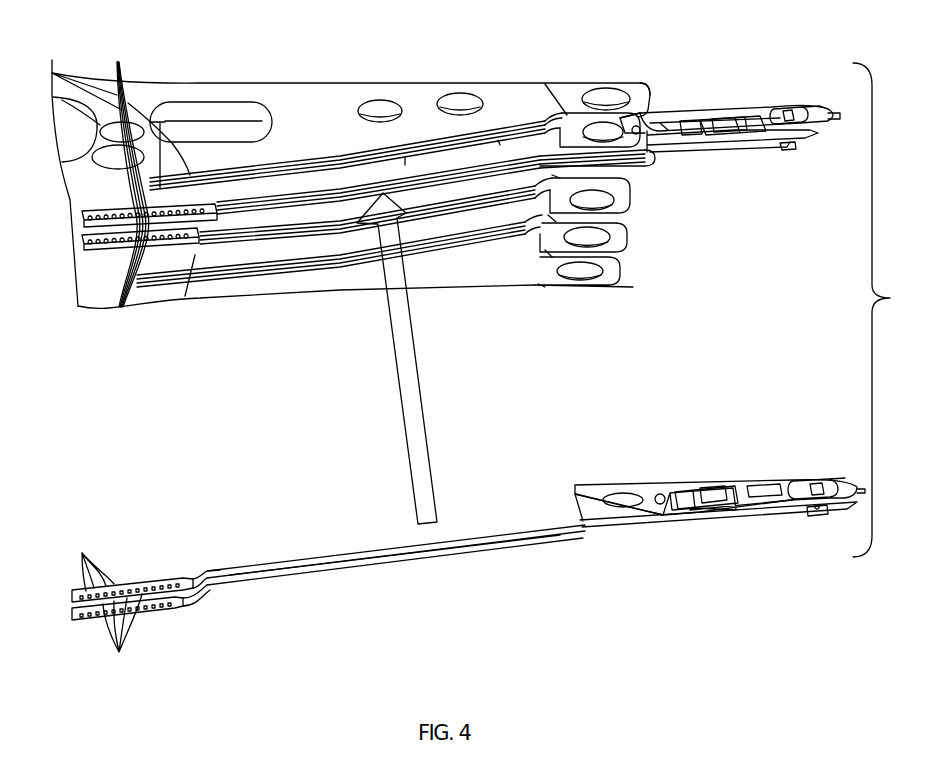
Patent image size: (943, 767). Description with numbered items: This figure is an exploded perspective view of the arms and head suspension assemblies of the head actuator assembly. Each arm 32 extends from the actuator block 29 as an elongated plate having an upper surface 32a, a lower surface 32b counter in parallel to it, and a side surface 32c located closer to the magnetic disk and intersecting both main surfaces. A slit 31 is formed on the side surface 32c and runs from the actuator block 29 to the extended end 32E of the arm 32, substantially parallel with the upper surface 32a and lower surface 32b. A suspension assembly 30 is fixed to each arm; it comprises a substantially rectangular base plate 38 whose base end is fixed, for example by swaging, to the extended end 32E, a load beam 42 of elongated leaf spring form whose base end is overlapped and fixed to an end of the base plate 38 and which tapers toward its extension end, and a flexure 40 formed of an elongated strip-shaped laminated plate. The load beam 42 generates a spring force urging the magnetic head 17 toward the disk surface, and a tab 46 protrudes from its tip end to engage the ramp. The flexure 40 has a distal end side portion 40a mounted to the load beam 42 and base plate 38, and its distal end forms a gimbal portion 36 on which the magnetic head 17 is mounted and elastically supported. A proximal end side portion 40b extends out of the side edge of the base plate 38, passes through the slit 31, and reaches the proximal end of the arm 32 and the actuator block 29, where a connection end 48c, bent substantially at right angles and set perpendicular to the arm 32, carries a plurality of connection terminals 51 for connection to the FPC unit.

The magnetic head 17 is at (795, 109).
The actuator block 29 is at (93, 308).
The suspension assembly 30 is at (736, 99).
The slit 31 is at (282, 168).
The arm 32 is at (321, 167).
The upper surface 32a is at (345, 98).
The lower surface 32b is at (405, 158).
The side surface 32c is at (500, 140).
The extended end 32E is at (572, 96).
The gimbal portion 36 is at (775, 109).
The base plate 38 is at (648, 113).
The flexure 40 is at (649, 152).
The distal end side portion 40a is at (690, 119).
The proximal end side portion 40b is at (357, 552).
The load beam 42 is at (706, 118).
The tab 46 is at (822, 116).
The connection end 48c is at (82, 238).
The connection terminals 51 is at (118, 100).